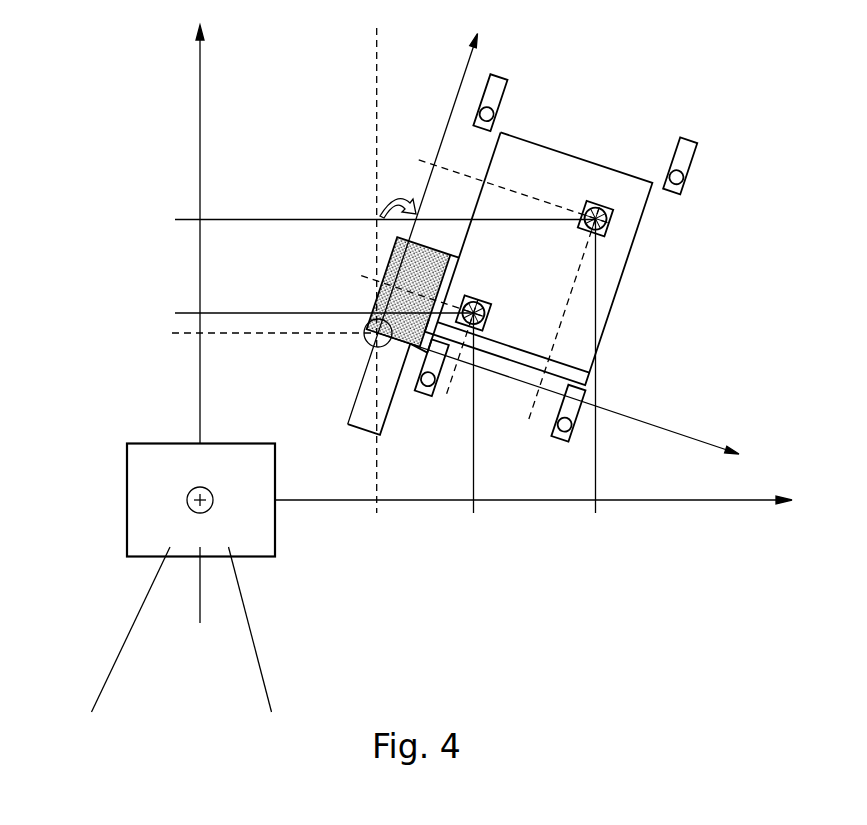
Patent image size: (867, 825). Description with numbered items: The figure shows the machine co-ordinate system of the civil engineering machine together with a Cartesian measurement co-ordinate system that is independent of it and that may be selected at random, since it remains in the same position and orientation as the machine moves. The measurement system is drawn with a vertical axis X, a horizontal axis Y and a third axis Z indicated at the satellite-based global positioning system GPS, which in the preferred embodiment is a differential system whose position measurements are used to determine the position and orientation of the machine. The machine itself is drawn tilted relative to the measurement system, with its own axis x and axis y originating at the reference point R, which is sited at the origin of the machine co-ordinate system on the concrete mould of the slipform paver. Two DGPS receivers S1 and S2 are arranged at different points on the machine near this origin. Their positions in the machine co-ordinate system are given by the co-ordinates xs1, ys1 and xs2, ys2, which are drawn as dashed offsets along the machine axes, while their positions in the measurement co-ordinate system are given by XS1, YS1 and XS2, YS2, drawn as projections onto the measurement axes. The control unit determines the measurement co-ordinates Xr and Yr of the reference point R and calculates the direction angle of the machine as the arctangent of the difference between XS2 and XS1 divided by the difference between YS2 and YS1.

The X axis of measurement co-ordinate system X is at (189, 232).
The Y axis of measurement co-ordinate system Y is at (533, 515).
The x axis of machine co-ordinate system x is at (413, 223).
The y axis of machine co-ordinate system y is at (560, 407).
The X co-ordinate of DGPS receiver S1 XS1 is at (299, 314).
The X co-ordinate of DGPS receiver S2 XS2 is at (357, 220).
The X co-ordinate of reference point R Xr is at (259, 335).
The Y co-ordinate of reference point R Yr is at (380, 286).
The Y co-ordinate of DGPS receiver S1 YS1 is at (477, 428).
The Y co-ordinate of DGPS receiver S2 YS2 is at (594, 381).
The x co-ordinate of DGPS receiver S1 in machine co-ordinate system xs1 is at (402, 290).
The x co-ordinate of DGPS receiver S2 in machine co-ordinate system xs2 is at (495, 184).
The y co-ordinate of DGPS receiver S1 in machine co-ordinate system ys1 is at (453, 360).
The y co-ordinate of DGPS receiver S2 in machine co-ordinate system ys2 is at (551, 324).
The DGPS receiver S1 is at (489, 311).
The DGPS receiver S2 is at (586, 208).
The reference point R is at (364, 341).
The satellite-based global positioning system GPS is at (127, 500).
The Z axis of measurement co-ordinate system Z is at (209, 491).